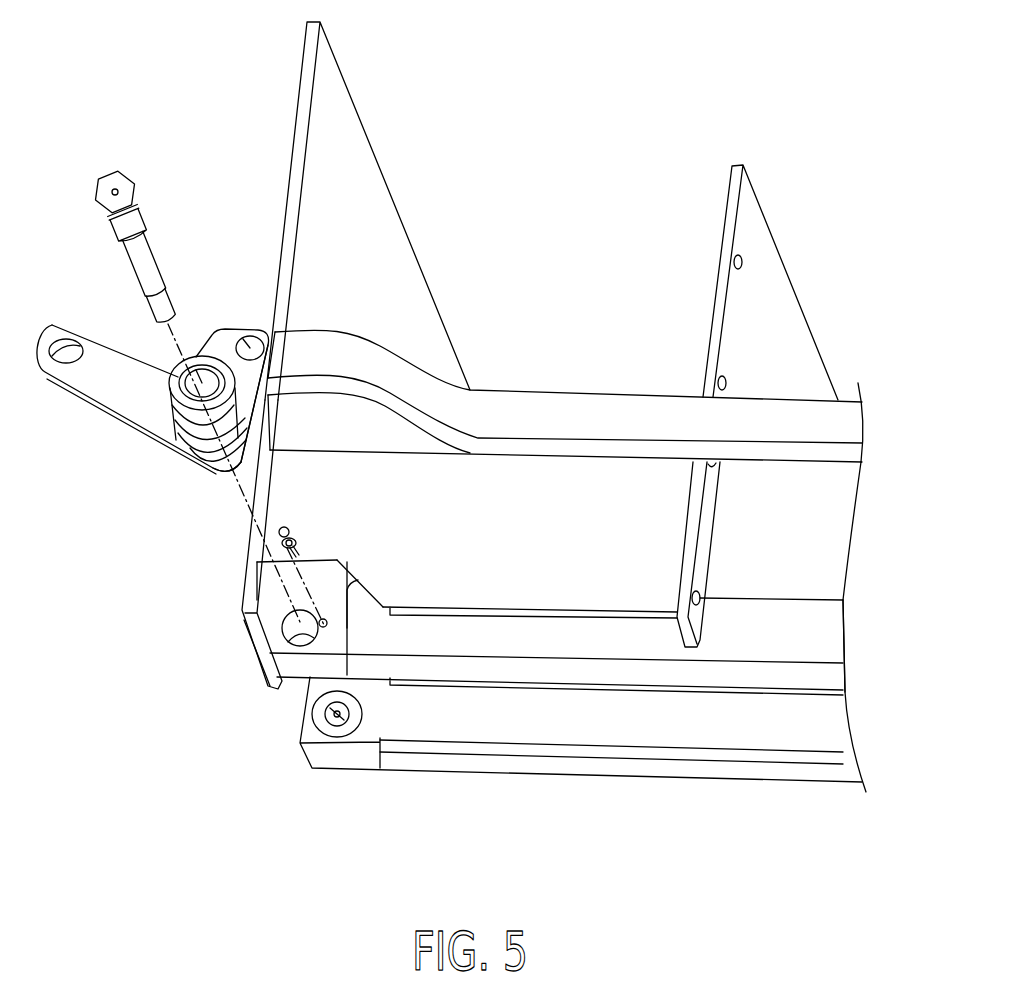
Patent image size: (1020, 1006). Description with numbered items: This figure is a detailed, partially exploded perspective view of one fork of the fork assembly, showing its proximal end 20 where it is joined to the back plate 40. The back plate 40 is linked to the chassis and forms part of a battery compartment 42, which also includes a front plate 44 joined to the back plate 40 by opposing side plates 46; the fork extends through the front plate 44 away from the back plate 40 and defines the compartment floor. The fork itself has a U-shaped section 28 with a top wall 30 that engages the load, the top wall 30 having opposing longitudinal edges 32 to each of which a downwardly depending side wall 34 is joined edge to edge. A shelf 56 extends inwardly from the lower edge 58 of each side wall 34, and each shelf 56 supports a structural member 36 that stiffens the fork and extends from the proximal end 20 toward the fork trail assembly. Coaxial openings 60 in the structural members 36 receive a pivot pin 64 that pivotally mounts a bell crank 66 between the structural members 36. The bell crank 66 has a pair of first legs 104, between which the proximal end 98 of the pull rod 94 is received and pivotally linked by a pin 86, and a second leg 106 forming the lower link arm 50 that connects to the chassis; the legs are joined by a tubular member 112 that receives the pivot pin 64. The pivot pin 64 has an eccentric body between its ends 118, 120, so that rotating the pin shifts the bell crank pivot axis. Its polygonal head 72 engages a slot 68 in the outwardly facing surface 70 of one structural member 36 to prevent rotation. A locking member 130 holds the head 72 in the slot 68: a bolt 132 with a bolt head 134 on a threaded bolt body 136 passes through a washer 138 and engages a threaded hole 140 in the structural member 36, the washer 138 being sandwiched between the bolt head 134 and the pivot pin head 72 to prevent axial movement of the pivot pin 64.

The proximal end 20 is at (358, 630).
The U-shaped section 28 is at (712, 795).
The top wall 30 is at (522, 670).
The longitudinal edges 32 is at (370, 590).
The side wall 34 is at (473, 637).
The structural member 36 is at (277, 598).
The back plate 40 is at (328, 43).
The battery compartment 42 is at (563, 205).
The front plate 44 is at (730, 172).
The side plates 46 is at (268, 522).
The lower link arm 50 is at (113, 392).
The shelf 56 is at (575, 685).
The lower edge 58 is at (653, 650).
The coaxial openings 60 is at (280, 612).
The pivot pin 64 is at (180, 224).
The bell crank 66 is at (163, 485).
The slot 68 is at (263, 660).
The outwardly facing surface 70 is at (340, 563).
The pivot pin head 72 is at (121, 170).
The pin 86 is at (266, 357).
The pull rod 94 is at (588, 403).
The proximal end 98 is at (278, 318).
The first legs 104 is at (248, 455).
The second leg 106 is at (82, 377).
The tubular member 112 is at (217, 480).
The pivot pin end 118 is at (143, 202).
The pivot pin end 120 is at (185, 303).
The locking member 130 is at (245, 545).
The bolt 132 is at (187, 443).
The bolt head 134 is at (290, 525).
The threaded bolt body 136 is at (302, 545).
The washer 138 is at (303, 549).
The threaded hole 140 is at (328, 622).